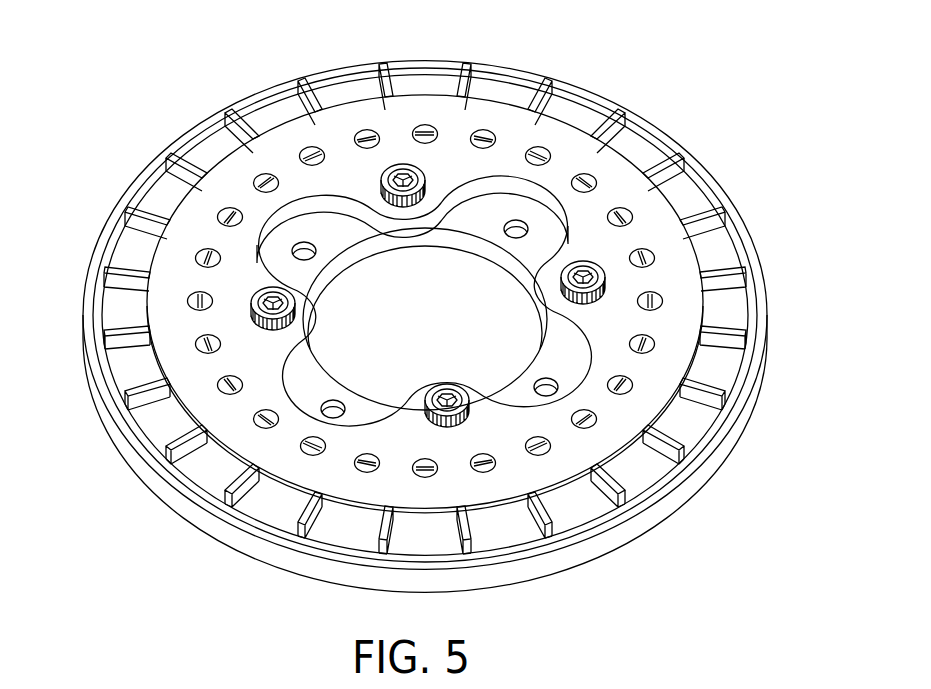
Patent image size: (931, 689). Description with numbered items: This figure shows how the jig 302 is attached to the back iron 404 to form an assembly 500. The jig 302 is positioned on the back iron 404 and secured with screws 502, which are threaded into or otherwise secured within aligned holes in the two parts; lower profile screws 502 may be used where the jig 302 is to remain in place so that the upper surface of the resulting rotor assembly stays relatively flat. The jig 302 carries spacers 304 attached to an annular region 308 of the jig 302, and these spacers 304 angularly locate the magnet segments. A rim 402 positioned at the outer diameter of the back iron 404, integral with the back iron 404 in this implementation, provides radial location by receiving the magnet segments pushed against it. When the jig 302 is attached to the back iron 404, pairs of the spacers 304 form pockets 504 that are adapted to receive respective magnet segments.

The assembly 500 is at (98, 137).
The jig 302 is at (342, 132).
The spacers 304 is at (543, 85).
The annular region 308 is at (477, 112).
The rim 402 is at (667, 145).
The back iron 404 is at (677, 500).
The screws 502 is at (443, 392).
The pockets 504 is at (583, 115).